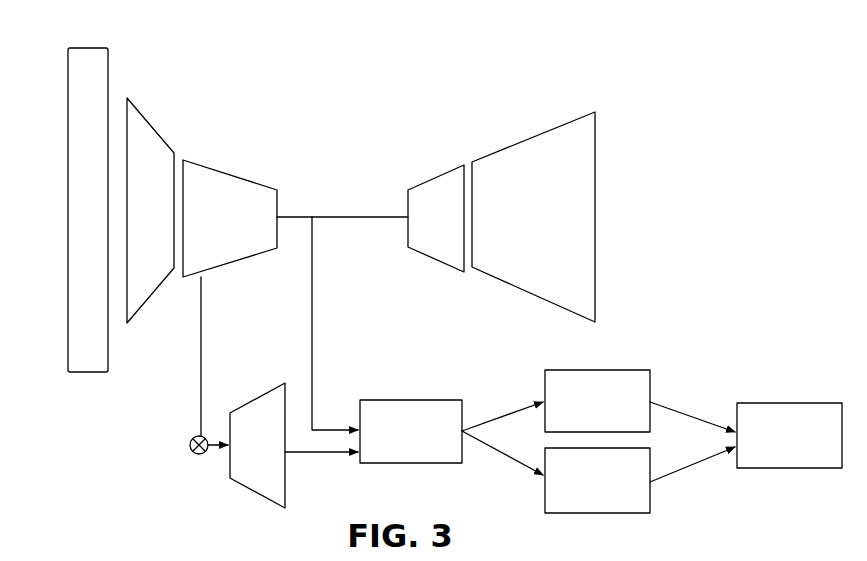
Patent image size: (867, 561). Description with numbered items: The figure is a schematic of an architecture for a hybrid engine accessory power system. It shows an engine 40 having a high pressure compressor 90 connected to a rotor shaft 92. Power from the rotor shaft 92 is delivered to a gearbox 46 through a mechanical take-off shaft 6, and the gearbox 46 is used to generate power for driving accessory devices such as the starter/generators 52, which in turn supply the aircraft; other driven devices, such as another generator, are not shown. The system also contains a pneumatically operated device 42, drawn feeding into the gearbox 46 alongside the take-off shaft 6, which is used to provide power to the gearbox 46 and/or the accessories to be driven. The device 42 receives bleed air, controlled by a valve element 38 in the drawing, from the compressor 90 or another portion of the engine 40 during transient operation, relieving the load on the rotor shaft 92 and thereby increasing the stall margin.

The engine 40 is at (348, 134).
The high pressure compressor 90 is at (232, 173).
The rotor shaft 92 is at (370, 216).
The mechanical take-off shaft 6 is at (312, 310).
The valve 38 is at (192, 438).
The pneumatically operated device 42 is at (230, 467).
The gearbox 46 is at (412, 400).
The starter/generators 52 is at (617, 370).